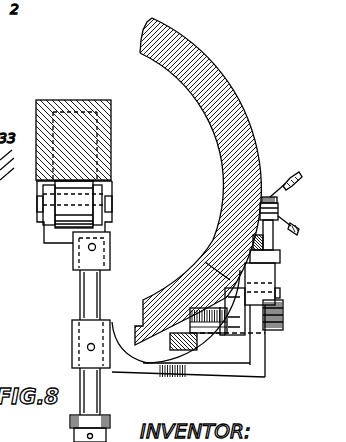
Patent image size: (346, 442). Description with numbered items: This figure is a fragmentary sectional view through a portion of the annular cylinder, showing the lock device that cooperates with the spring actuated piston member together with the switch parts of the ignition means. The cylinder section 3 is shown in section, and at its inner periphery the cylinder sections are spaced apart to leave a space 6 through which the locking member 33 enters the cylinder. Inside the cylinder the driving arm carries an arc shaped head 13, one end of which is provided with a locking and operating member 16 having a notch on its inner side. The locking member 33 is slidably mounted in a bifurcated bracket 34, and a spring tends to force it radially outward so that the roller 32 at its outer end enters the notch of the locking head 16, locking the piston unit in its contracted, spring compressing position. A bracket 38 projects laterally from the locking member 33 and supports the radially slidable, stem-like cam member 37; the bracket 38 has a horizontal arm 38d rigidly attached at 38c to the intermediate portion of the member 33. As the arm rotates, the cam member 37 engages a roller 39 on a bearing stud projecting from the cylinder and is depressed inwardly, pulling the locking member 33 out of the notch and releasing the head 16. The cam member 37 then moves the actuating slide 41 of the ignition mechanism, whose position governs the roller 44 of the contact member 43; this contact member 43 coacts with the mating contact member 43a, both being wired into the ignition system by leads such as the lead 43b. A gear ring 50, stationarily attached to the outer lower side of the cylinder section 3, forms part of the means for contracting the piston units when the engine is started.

The cylinder section 3 is at (226, 82).
The space 6 is at (147, 303).
The arc shaped head 13 is at (88, 108).
The locking and operating member 16 is at (79, 108).
The roller 32 is at (100, 183).
The locking member 33 is at (98, 283).
The bracket 34 is at (70, 421).
The cam member 37 is at (283, 304).
The bracket 38 is at (111, 325).
The attachment point 38c is at (88, 348).
The horizontal arm 38d is at (188, 372).
The roller 39 is at (270, 335).
The actuating slide 41 is at (217, 266).
The contact member 43 is at (261, 202).
The mating contact member 43a is at (256, 228).
The lead 43b is at (288, 183).
The roller 44 is at (253, 238).
The gear ring 50 is at (205, 350).